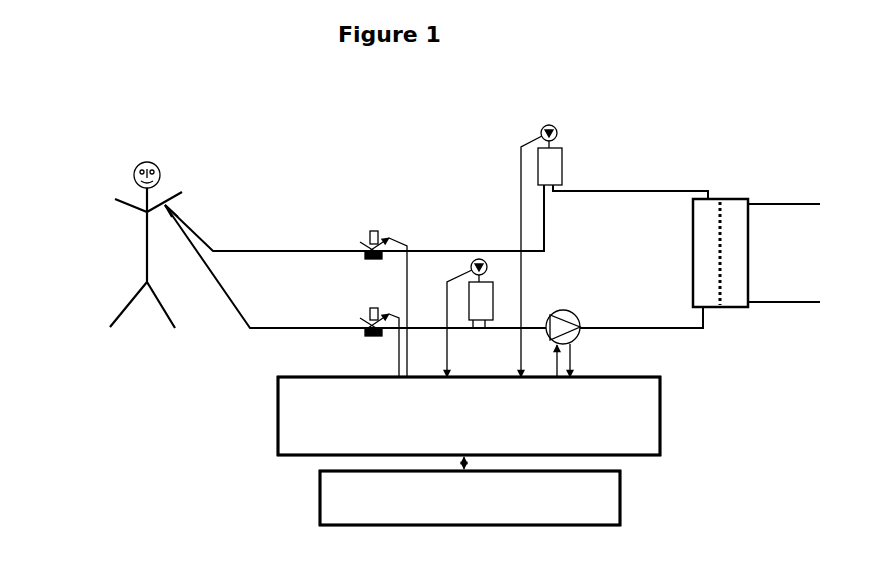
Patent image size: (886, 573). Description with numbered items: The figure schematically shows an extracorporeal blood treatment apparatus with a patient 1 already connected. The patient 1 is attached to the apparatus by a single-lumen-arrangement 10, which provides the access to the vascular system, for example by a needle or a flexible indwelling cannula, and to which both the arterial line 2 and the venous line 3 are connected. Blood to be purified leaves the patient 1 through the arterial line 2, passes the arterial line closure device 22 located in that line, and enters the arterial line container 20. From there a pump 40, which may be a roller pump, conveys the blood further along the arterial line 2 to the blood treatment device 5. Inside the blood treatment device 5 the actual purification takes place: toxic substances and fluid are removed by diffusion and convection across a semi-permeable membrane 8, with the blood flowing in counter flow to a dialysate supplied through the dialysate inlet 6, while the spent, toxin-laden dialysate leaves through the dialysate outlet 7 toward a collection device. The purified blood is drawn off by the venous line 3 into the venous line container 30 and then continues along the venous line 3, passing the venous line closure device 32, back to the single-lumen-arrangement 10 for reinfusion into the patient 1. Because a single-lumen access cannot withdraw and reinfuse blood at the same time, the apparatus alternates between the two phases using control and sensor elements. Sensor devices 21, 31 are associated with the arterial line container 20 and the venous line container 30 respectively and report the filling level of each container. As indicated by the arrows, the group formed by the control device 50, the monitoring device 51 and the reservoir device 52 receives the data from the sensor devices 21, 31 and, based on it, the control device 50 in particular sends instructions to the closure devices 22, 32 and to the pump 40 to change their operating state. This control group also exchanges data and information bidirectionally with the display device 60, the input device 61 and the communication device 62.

The patient 1 is at (126, 237).
The single-lumen-arrangement 10 is at (170, 206).
The venous line 3 is at (265, 248).
The arterial line 2 is at (244, 329).
The blood treatment device 5 is at (690, 252).
The semi-permeable membrane 8 is at (728, 250).
The dialysate inlet 6 is at (772, 200).
The dialysate outlet 7 is at (804, 314).
The venous line closure device 32 is at (367, 218).
The arterial line closure device 22 is at (364, 312).
The sensor device 21 is at (484, 260).
The arterial line container 20 is at (507, 297).
The sensor device 31 is at (548, 124).
The venous line container 30 is at (573, 160).
The pump 40 is at (571, 306).
The control device 50 is at (276, 420).
The monitoring device 51 is at (469, 416).
The reservoir device 52 is at (469, 416).
The display device 60 is at (628, 482).
The input device 61 is at (470, 498).
The communication device 62 is at (470, 498).